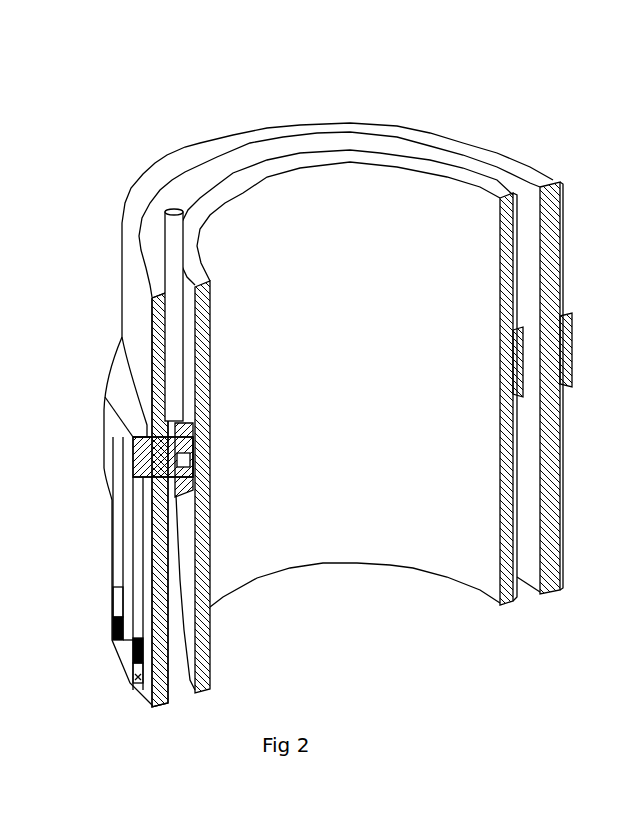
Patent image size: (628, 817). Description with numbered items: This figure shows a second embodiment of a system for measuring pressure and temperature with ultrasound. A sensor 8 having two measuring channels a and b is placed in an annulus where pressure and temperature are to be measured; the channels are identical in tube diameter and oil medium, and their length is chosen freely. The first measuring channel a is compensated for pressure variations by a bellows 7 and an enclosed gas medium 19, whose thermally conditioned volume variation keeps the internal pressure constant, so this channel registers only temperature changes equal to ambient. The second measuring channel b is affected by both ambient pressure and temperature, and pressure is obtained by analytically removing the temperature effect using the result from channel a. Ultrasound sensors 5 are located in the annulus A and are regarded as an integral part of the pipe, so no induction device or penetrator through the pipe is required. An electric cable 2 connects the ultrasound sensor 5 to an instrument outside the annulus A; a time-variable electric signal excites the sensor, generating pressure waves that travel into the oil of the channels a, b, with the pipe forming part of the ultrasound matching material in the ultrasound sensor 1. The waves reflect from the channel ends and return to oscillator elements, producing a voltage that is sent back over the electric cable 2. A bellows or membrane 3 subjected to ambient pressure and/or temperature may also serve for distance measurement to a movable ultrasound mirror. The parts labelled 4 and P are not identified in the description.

The ultrasound sensor 1 is at (350, 187).
The electric cable 2 is at (174, 225).
The bellows or membrane 3 is at (183, 460).
The rod 4 is at (130, 522).
The ultrasound sensor 5 is at (157, 425).
The bellows 7 is at (113, 632).
The sensor 8 is at (104, 417).
The enclosed medium 19 is at (133, 683).
The annulus A is at (232, 162).
The annular space P is at (133, 253).
The first measuring channel a is at (127, 640).
The second measuring channel b is at (118, 573).